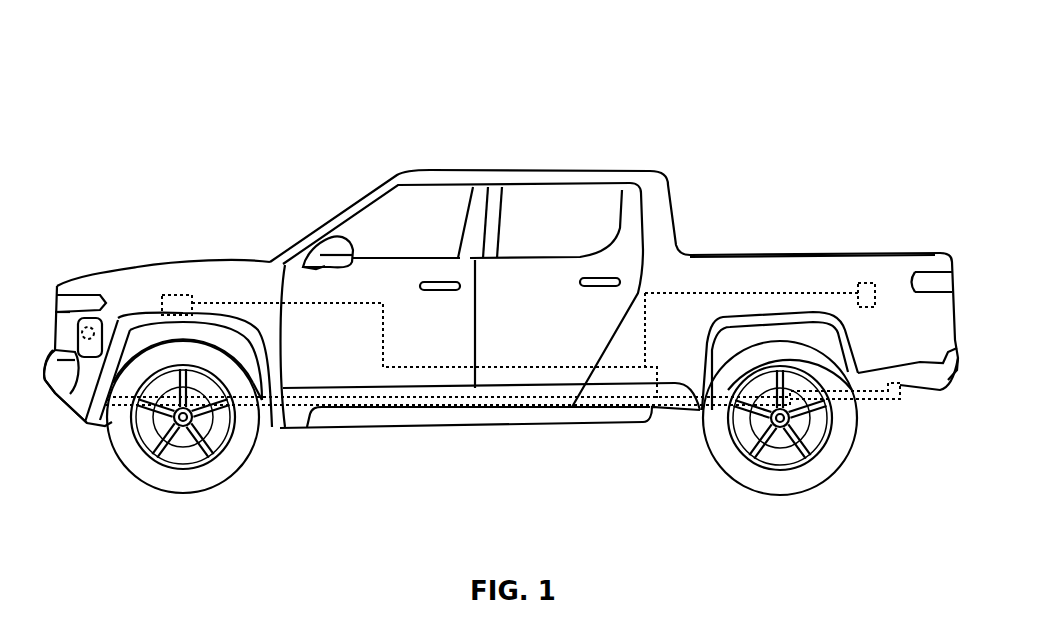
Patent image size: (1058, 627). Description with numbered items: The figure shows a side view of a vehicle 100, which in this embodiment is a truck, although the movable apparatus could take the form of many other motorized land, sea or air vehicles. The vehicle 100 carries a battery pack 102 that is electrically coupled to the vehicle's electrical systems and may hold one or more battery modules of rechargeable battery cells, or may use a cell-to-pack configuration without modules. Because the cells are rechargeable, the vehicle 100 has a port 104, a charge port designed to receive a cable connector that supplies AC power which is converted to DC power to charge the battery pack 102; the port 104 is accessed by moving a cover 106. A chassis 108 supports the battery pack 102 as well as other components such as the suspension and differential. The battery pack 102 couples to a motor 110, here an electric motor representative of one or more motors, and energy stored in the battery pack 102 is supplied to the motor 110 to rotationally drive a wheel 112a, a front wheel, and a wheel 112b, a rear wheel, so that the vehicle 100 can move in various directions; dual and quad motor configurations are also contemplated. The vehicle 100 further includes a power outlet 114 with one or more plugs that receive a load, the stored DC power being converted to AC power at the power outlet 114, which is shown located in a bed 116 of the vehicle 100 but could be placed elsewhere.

The vehicle 100 is at (87, 103).
The battery pack 102 is at (370, 387).
The port 104 is at (88, 326).
The cover 106 is at (73, 393).
The chassis 108 is at (677, 405).
The motor 110 is at (173, 294).
The wheel 112a is at (107, 433).
The wheel 112b is at (858, 430).
The power outlet 114 is at (860, 283).
The bed 116 is at (767, 253).